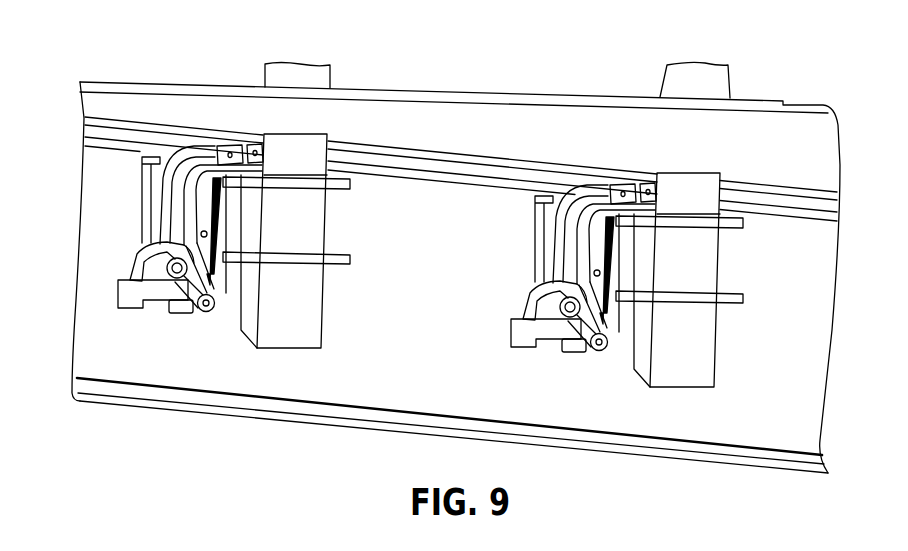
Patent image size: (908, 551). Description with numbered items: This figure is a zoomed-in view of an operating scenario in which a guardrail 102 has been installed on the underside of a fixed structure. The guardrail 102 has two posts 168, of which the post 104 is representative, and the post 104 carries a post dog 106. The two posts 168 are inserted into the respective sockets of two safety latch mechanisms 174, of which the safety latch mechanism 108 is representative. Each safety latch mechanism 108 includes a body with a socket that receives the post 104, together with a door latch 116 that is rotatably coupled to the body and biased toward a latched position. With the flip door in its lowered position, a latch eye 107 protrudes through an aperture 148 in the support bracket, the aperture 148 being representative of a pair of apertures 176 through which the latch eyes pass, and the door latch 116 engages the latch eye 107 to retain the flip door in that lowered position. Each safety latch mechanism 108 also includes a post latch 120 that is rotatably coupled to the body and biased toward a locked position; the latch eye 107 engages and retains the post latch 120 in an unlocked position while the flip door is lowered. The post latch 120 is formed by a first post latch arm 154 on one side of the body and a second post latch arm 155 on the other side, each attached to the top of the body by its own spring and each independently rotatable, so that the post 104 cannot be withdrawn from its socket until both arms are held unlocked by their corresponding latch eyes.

The guardrail 102 is at (806, 74).
The post 104 is at (708, 280).
The post dog 106 is at (700, 300).
The latch eye 107 is at (537, 305).
The safety latch mechanism 108 is at (617, 306).
The door latch 116 is at (534, 272).
The post latch 120 is at (571, 221).
The aperture 148 is at (516, 344).
The first post latch arm 154 is at (601, 165).
The second post latch arm 155 is at (636, 163).
The posts 168 is at (329, 68).
The safety latch mechanisms 174 is at (212, 292).
The apertures 176 is at (187, 312).